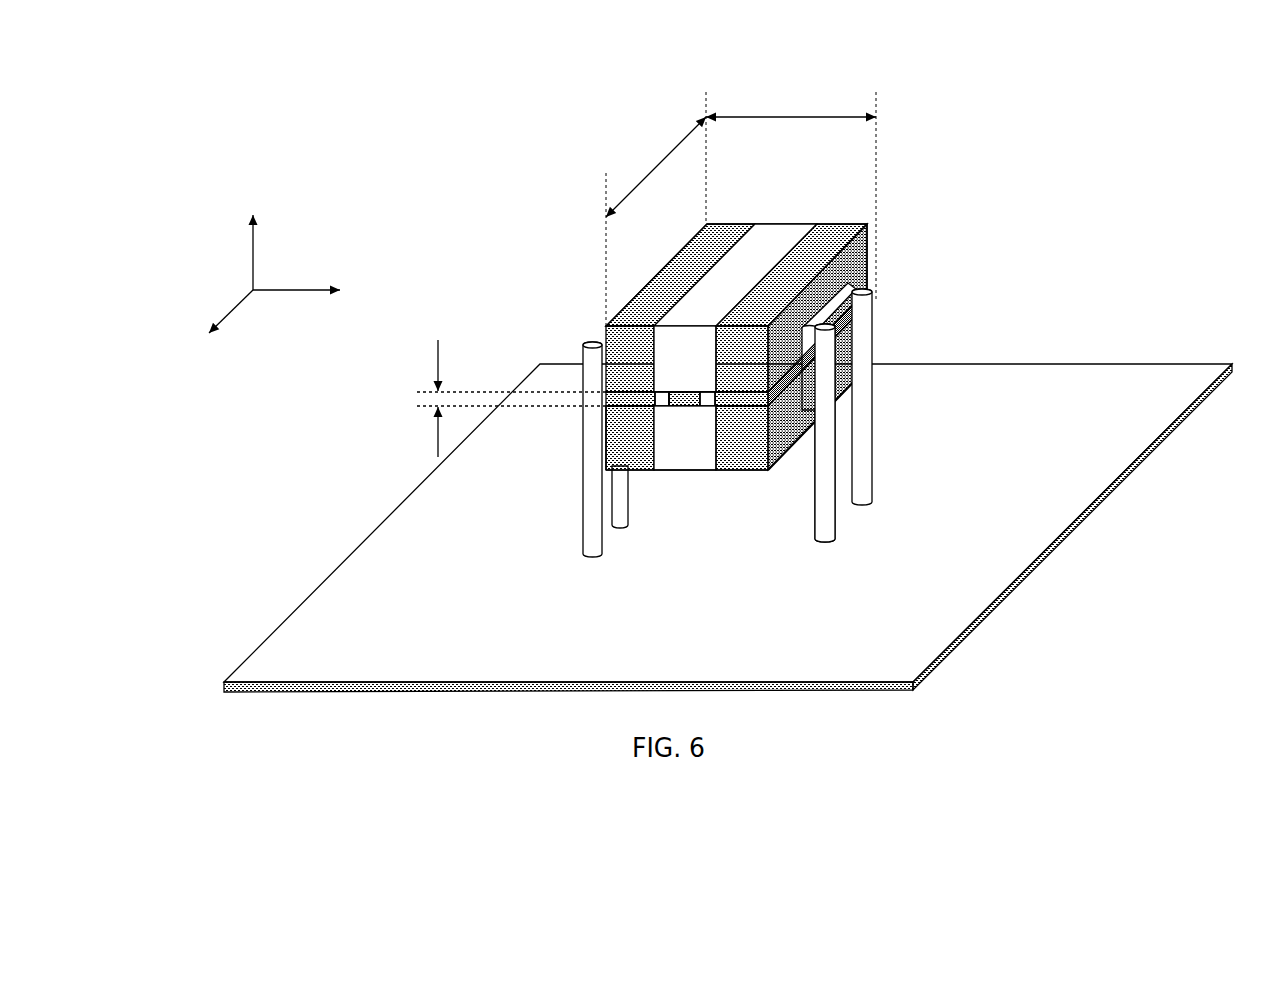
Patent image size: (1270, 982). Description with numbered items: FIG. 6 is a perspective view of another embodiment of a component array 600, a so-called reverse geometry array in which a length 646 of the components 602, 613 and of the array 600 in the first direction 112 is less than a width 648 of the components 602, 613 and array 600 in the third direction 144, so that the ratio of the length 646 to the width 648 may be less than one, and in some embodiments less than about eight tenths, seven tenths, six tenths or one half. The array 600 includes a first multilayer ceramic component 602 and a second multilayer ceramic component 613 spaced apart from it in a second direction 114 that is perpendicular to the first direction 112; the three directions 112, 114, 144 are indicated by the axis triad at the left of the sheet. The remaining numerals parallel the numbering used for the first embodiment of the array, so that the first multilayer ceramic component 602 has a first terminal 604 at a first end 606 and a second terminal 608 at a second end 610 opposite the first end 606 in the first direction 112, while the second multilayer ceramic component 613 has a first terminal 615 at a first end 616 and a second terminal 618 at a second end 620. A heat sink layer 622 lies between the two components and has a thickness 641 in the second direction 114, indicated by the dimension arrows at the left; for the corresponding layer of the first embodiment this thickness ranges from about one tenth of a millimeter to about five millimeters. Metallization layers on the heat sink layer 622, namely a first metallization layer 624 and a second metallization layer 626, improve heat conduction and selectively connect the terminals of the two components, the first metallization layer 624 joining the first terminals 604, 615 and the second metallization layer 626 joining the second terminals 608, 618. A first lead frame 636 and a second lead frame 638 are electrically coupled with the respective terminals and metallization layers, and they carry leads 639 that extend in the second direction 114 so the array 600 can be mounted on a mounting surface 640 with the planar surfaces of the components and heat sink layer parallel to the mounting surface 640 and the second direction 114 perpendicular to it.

The first direction 112 is at (324, 294).
The second direction 114 is at (249, 236).
The third direction 144 is at (212, 333).
The component array 600 is at (520, 166).
The first multilayer ceramic component 602 is at (801, 220).
The central strip of upper body 604 is at (735, 224).
The side strip of upper body 606 is at (679, 243).
The right side face of upper body 608 is at (859, 221).
The rod along side face 610 is at (872, 237).
The second multilayer ceramic component 613 is at (687, 474).
The lower body side strip 615 is at (604, 463).
The left side face of lower body 616 is at (603, 437).
The right strip of lower body 618 is at (767, 472).
The right side face of lower body 620 is at (783, 460).
The intermediate layer 622 is at (657, 388).
The element in intermediate layer 624 is at (612, 396).
The bottom surface of lower body 626 is at (733, 472).
The top surface of upper body 636 is at (630, 286).
The support post 638 is at (877, 313).
The support legs 639 is at (583, 528).
The base plate 640 is at (682, 660).
The layer thickness dimension 641 is at (438, 350).
The length 646 is at (834, 115).
The width 648 is at (636, 157).